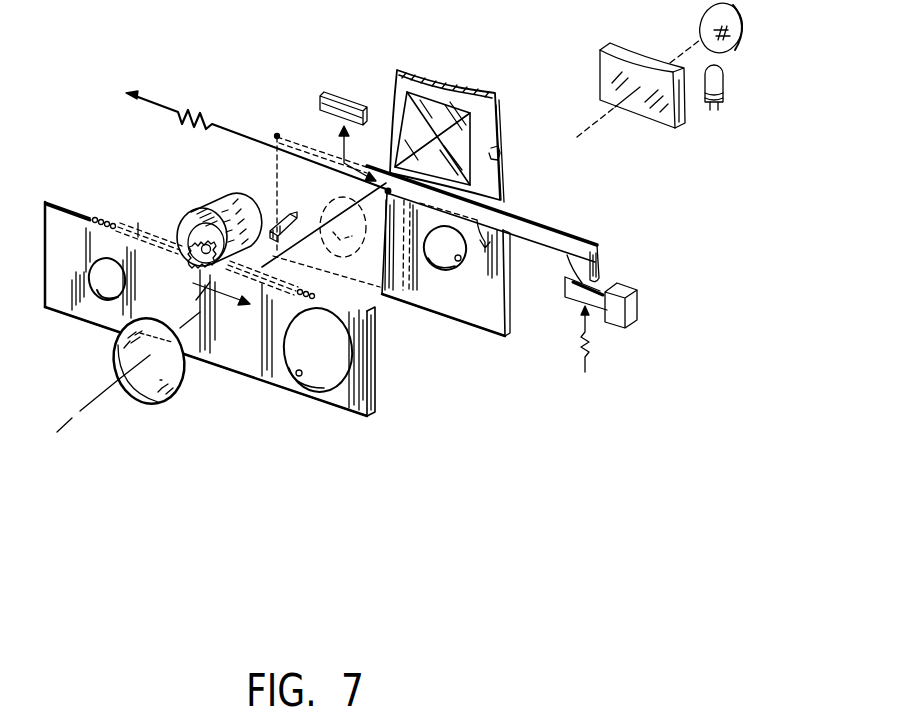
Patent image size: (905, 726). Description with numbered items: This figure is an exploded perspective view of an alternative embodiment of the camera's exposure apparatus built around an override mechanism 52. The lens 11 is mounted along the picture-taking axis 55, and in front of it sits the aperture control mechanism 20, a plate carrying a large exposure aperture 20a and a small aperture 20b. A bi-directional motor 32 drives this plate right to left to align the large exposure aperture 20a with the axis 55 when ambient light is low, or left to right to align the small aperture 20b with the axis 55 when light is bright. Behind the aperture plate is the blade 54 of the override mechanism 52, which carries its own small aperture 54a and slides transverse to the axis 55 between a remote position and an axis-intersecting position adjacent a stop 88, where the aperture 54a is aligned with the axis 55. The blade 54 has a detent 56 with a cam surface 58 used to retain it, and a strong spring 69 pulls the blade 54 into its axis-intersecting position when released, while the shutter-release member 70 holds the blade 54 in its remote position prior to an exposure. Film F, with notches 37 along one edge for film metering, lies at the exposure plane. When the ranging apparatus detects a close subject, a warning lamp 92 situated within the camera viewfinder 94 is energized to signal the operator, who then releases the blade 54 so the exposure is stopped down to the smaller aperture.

The lens 11 is at (180, 385).
The aperture control mechanism 20 is at (394, 356).
The f/2.8 exposure aperture 20a is at (295, 378).
The f/6 aperture 20b is at (93, 300).
The bi-directional motor 32 is at (200, 206).
The notches 37 is at (503, 152).
The override mechanism 52 is at (540, 400).
The blade 54 is at (472, 330).
The f/6 aperture 54a is at (462, 295).
The picture-taking axis 55 is at (105, 401).
The detent 56 is at (596, 282).
The cam surface 58 is at (598, 238).
The spring 69 is at (184, 114).
The shutter-release member 70 is at (352, 94).
The stop 88 is at (282, 222).
The warning lamp 92 is at (722, 80).
The camera viewfinder 94 is at (676, 104).
The film F is at (485, 127).